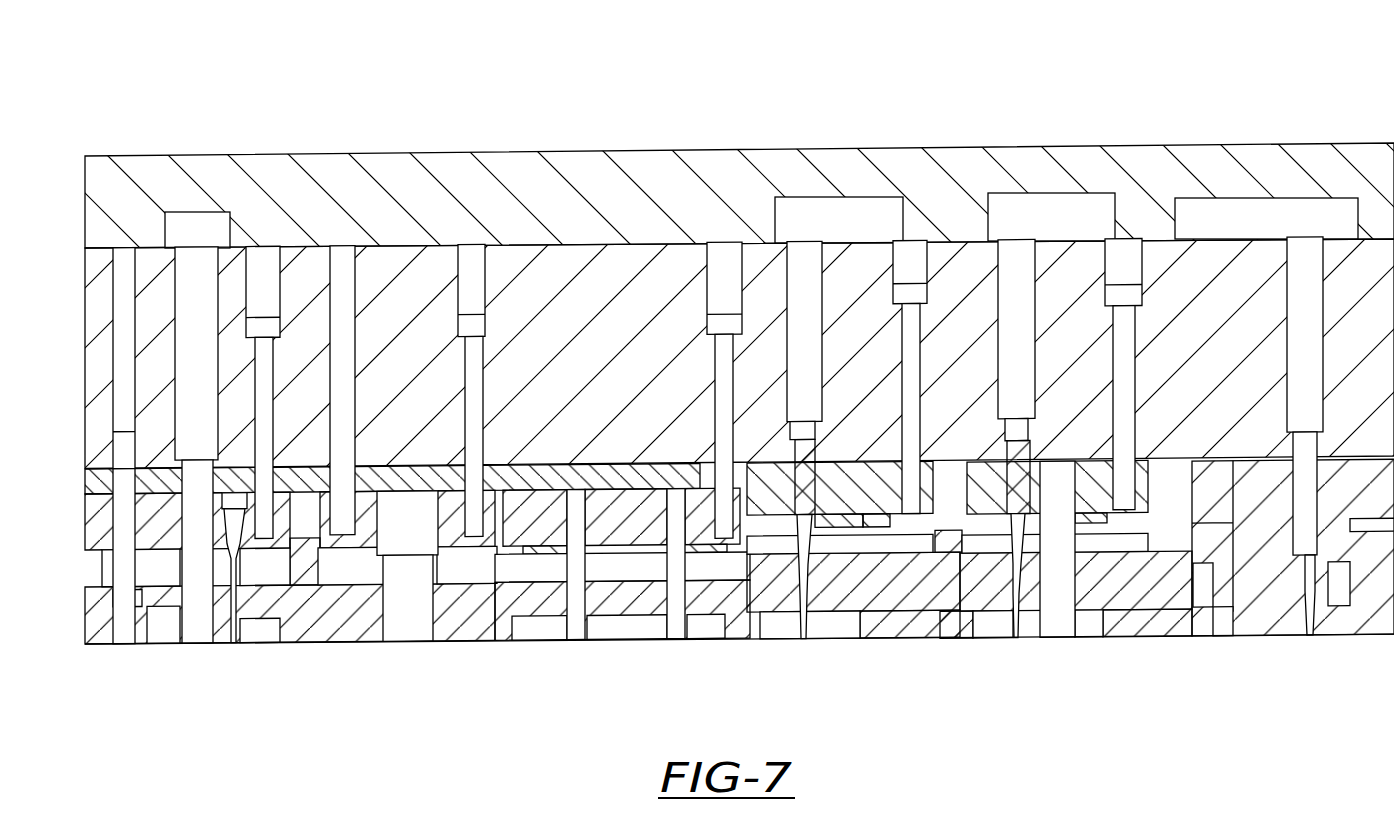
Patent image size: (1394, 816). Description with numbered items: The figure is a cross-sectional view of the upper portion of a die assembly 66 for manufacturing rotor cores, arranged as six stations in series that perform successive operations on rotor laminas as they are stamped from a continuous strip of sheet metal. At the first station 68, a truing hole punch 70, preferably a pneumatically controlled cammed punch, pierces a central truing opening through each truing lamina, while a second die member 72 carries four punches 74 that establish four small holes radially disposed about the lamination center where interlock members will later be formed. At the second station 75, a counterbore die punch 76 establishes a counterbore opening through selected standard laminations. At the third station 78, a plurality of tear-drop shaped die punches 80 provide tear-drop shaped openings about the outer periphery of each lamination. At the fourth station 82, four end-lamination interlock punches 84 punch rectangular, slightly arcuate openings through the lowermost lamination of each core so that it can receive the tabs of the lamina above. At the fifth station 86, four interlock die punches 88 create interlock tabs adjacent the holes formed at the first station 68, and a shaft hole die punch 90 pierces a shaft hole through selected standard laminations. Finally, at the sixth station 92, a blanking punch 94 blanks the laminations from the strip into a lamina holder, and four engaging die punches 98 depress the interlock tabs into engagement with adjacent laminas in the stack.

The die assembly 66 is at (951, 126).
The first station 68 is at (280, 673).
The truing hole punch 70 is at (176, 645).
The second die member 72 is at (228, 643).
The punches 74 is at (262, 645).
The second station 75 is at (487, 675).
The counterbore die punch 76 is at (440, 646).
The third station 78 is at (747, 677).
The tear-drop shaped die punches 80 is at (588, 648).
The fourth station 82 is at (925, 679).
The end-lamination interlock punches 84 is at (812, 649).
The fifth station 86 is at (1140, 681).
The interlock die punches 88 is at (1016, 630).
The shaft hole die punch 90 is at (1080, 649).
The sixth station 92 is at (1292, 597).
The blanking punch 94 is at (1365, 683).
The engaging die punches 98 is at (1312, 632).